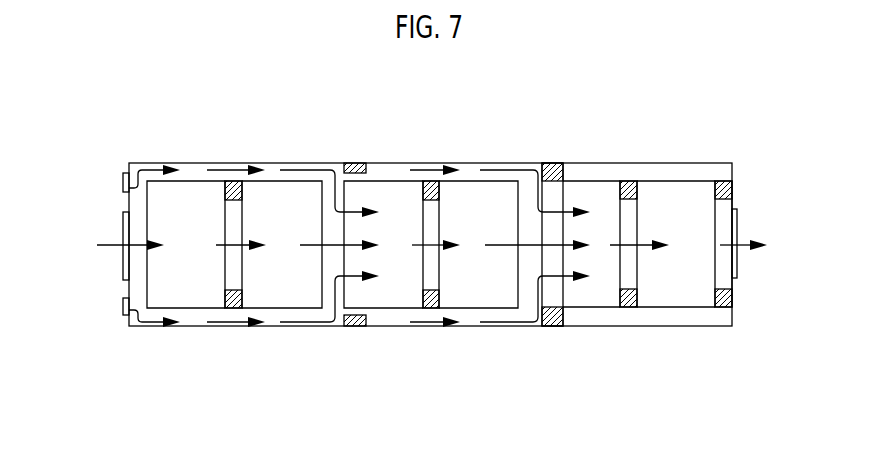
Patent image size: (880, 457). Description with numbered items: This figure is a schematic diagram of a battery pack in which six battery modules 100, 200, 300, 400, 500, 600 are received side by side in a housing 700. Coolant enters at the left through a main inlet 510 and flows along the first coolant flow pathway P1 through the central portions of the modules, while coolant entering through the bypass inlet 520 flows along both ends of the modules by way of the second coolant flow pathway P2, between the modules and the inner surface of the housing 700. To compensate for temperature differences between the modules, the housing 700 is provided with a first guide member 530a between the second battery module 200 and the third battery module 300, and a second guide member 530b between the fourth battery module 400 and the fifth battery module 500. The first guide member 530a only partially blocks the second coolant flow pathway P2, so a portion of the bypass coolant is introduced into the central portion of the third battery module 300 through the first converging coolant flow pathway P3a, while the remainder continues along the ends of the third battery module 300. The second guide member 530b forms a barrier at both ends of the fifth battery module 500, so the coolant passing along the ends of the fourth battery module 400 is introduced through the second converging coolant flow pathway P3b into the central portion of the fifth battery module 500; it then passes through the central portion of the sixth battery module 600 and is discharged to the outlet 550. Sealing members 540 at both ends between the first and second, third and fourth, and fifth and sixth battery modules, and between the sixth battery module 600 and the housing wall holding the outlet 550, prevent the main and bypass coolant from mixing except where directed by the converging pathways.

The first battery module 100 is at (197, 292).
The second battery module 200 is at (300, 292).
The third battery module 300 is at (400, 292).
The fourth battery module 400 is at (472, 292).
The fifth battery module 500 is at (597, 292).
The sixth battery module 600 is at (685, 292).
The housing 700 is at (727, 326).
The main inlet 510 is at (122, 228).
The bypass inlet 520 is at (122, 180).
The first guide member 530a is at (350, 163).
The second guide member 530b is at (552, 163).
The sealing member 540 is at (235, 181).
The outlet 550 is at (738, 270).
The first coolant flow pathway P1 is at (219, 246).
The second coolant flow pathway P2 is at (212, 168).
The first converging coolant flow pathway P3a is at (345, 326).
The second converging coolant flow pathway P3b is at (545, 326).